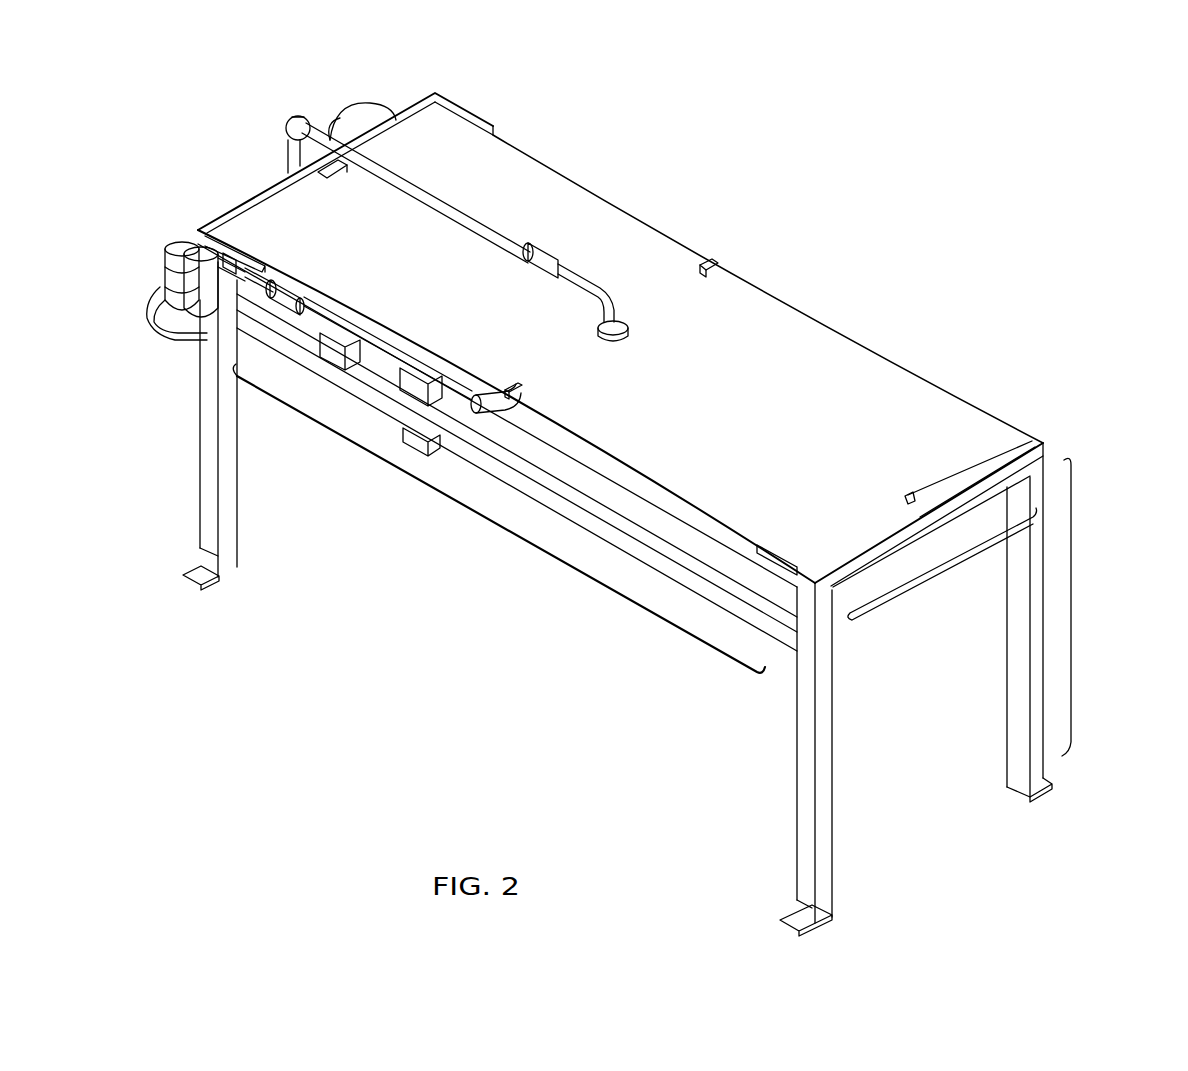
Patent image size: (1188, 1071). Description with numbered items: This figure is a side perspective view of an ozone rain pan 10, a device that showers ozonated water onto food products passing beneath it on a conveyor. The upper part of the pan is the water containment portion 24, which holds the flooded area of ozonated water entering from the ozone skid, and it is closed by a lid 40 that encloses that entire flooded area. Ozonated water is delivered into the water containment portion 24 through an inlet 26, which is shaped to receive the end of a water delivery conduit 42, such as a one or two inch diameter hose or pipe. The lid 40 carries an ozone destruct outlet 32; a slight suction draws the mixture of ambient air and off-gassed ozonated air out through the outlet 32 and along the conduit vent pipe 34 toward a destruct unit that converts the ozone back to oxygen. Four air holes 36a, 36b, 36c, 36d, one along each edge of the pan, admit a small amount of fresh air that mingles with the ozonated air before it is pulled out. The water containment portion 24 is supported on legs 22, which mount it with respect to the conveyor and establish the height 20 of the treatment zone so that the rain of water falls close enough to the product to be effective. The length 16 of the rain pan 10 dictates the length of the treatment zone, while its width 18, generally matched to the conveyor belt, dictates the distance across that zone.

The ozone rain pan 10 is at (1097, 319).
The length 16 is at (957, 570).
The width 18 is at (478, 522).
The height 20 is at (1074, 592).
The legs 22 is at (1015, 722).
The water containment portion 24 is at (813, 313).
The inlet 26 is at (515, 402).
The ozone destruct outlet 32 is at (622, 334).
The conduit vent pipe 34 is at (285, 118).
The air hole 36a is at (912, 493).
The air hole 36b is at (708, 265).
The air hole 36c is at (330, 172).
The air hole 36d is at (520, 384).
The lid 40 is at (735, 392).
The water delivery conduit 42 is at (345, 345).